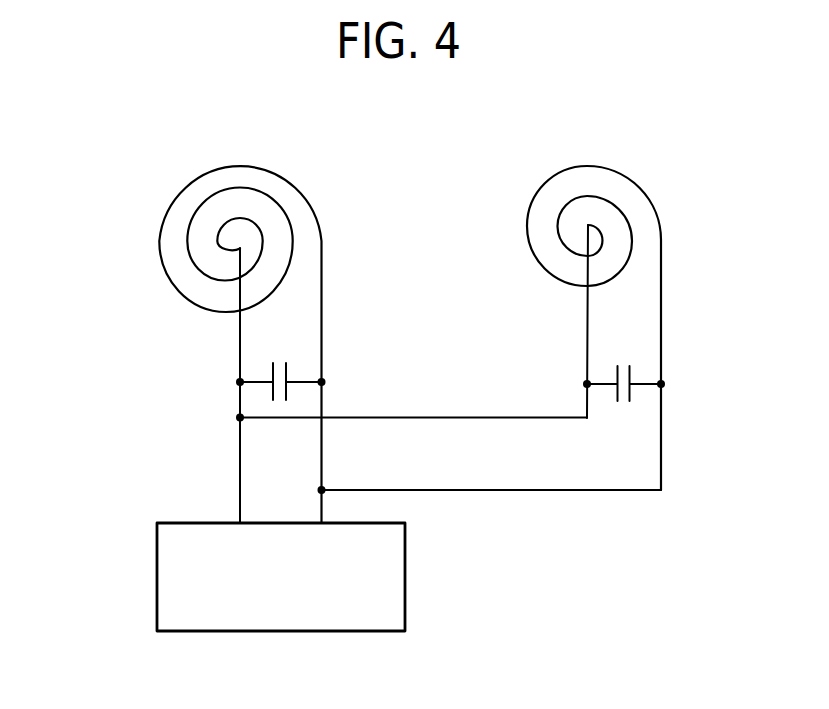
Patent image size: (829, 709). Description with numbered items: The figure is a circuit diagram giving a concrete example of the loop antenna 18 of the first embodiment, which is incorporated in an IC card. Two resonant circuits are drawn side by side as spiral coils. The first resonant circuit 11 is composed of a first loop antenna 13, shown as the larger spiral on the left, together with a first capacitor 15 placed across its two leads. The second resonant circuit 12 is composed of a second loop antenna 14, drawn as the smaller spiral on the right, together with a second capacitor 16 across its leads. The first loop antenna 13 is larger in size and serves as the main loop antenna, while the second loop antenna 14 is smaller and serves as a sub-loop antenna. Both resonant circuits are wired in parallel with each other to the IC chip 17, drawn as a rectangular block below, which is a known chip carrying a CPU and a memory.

The first resonant circuit 11 is at (191, 310).
The second resonant circuit 12 is at (647, 295).
The first loop antenna 13 is at (240, 158).
The second loop antenna 14 is at (592, 165).
The first capacitor 15 is at (287, 372).
The second capacitor 16 is at (630, 373).
The IC chip 17 is at (405, 573).
The loop antenna 18 is at (414, 310).